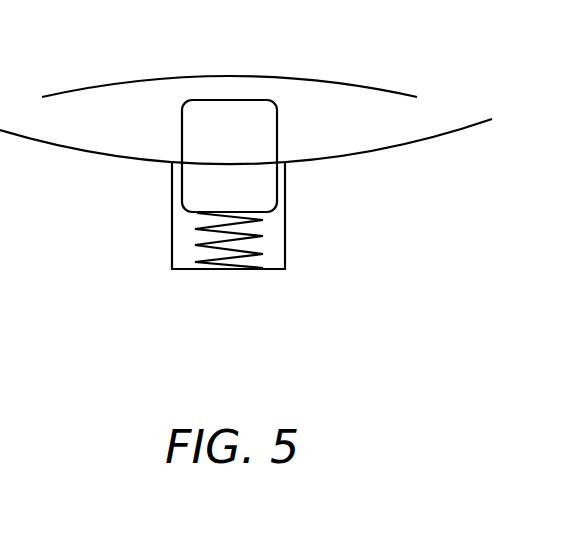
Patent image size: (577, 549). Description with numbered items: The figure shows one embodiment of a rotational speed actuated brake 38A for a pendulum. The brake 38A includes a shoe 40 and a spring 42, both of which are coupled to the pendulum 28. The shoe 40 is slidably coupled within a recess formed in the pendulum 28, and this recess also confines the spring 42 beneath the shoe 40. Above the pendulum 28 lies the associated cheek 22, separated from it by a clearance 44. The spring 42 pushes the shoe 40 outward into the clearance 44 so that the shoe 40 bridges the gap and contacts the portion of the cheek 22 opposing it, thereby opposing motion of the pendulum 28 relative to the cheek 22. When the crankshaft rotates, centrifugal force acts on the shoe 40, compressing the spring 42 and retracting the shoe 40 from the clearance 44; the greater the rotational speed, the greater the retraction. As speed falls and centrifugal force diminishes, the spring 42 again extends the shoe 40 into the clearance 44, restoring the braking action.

The cheek 22 is at (69, 86).
The pendulum 28 is at (488, 158).
The rotational speed actuated brake 38A is at (312, 180).
The shoe 40 is at (235, 93).
The spring 42 is at (200, 247).
The clearance 44 is at (272, 89).